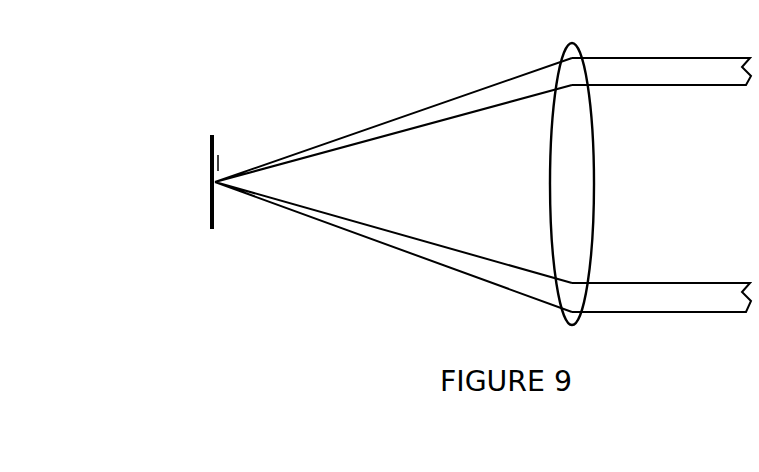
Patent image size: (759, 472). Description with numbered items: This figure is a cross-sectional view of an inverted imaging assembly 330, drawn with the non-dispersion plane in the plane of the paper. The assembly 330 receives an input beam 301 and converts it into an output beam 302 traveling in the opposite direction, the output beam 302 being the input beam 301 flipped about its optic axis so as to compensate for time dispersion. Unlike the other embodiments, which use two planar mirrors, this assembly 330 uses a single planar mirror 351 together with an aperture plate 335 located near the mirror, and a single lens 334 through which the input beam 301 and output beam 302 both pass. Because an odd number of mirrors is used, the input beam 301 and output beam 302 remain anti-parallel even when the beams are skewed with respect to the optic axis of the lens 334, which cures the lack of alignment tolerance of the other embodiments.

The imaging assembly 330 is at (290, 63).
The planar mirror 351 is at (210, 148).
The aperture plate 335 is at (216, 200).
The lens 334 is at (588, 160).
The output beam 302 is at (692, 83).
The input beam 301 is at (704, 312).